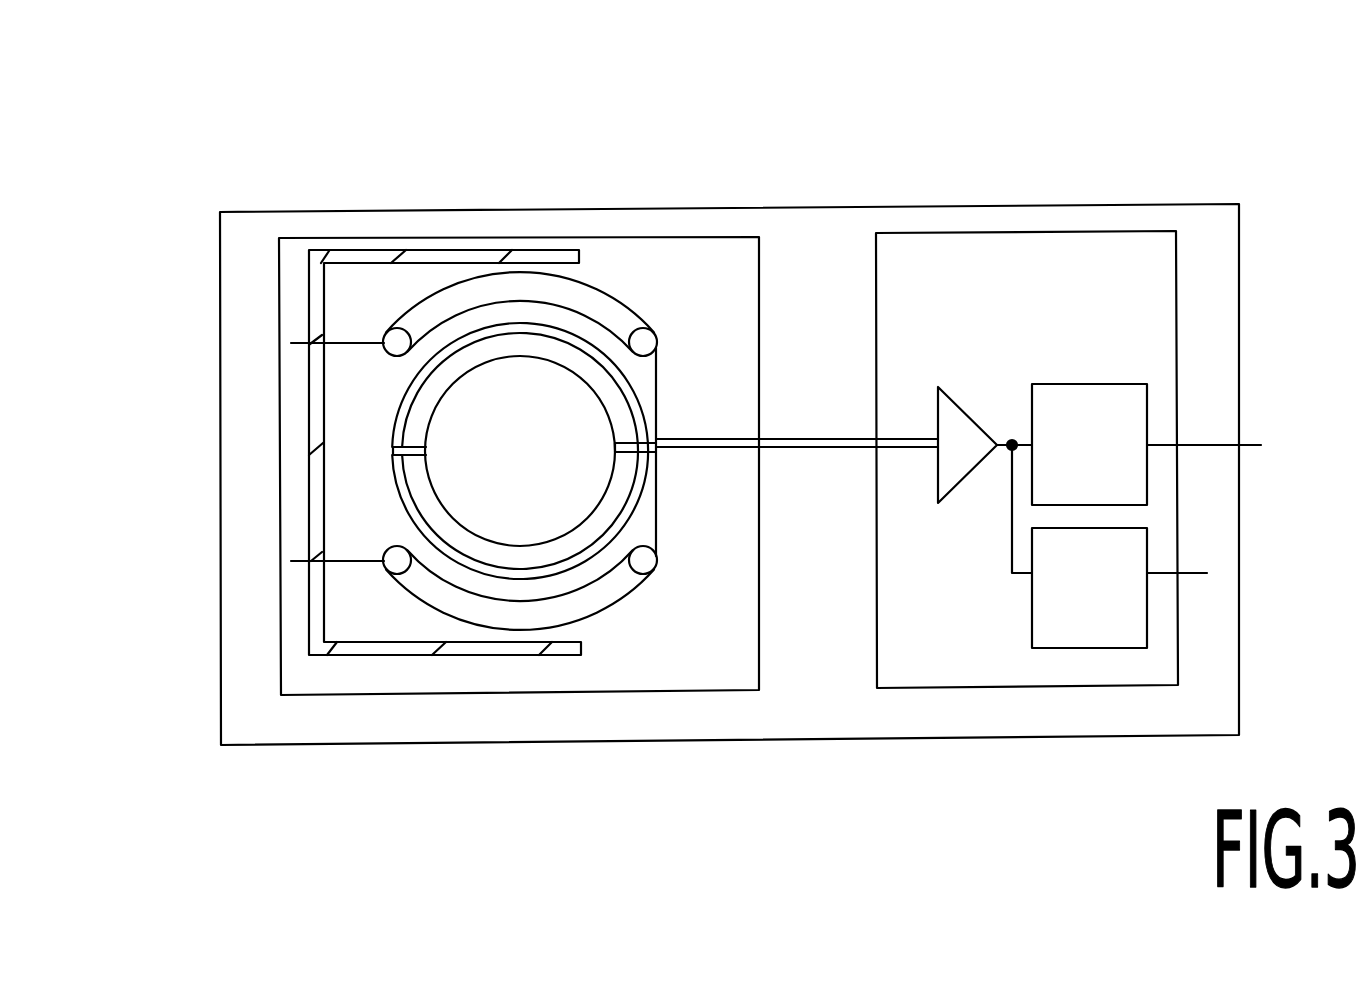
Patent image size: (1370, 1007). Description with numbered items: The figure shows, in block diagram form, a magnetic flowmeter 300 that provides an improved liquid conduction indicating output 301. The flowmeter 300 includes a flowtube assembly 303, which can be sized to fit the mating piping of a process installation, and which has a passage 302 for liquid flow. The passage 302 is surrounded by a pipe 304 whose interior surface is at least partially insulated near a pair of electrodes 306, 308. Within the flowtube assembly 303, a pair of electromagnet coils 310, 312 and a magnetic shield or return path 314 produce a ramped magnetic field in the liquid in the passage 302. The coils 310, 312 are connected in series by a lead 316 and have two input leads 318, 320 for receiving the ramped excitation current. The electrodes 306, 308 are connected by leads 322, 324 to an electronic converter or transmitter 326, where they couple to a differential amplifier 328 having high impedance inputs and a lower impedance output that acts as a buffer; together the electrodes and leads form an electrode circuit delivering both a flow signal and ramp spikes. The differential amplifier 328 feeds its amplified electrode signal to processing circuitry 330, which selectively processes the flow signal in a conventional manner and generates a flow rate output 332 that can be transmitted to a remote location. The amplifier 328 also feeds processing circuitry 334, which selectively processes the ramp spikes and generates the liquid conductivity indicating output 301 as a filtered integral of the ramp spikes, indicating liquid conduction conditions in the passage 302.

The magnetic flowmeter 300 is at (842, 98).
The liquid conduction indicating output 301 is at (1193, 578).
The passage 302 is at (533, 520).
The flowtube assembly 303 is at (278, 253).
The pipe 304 is at (570, 350).
The electrode 306 is at (428, 447).
The electrode 308 is at (618, 455).
The electromagnet coil 310 is at (425, 297).
The electromagnet coil 312 is at (422, 592).
The magnetic shield or return path 314 is at (308, 437).
The lead 316 is at (659, 358).
The input lead 318 is at (288, 336).
The input lead 320 is at (338, 558).
The lead 322 is at (707, 437).
The lead 324 is at (736, 449).
The electronic converter or transmitter 326 is at (897, 233).
The differential amplifier 328 is at (952, 400).
The processing circuitry 330 is at (1094, 383).
The flow rate output 332 is at (1207, 438).
The processing circuitry 334 is at (1100, 648).